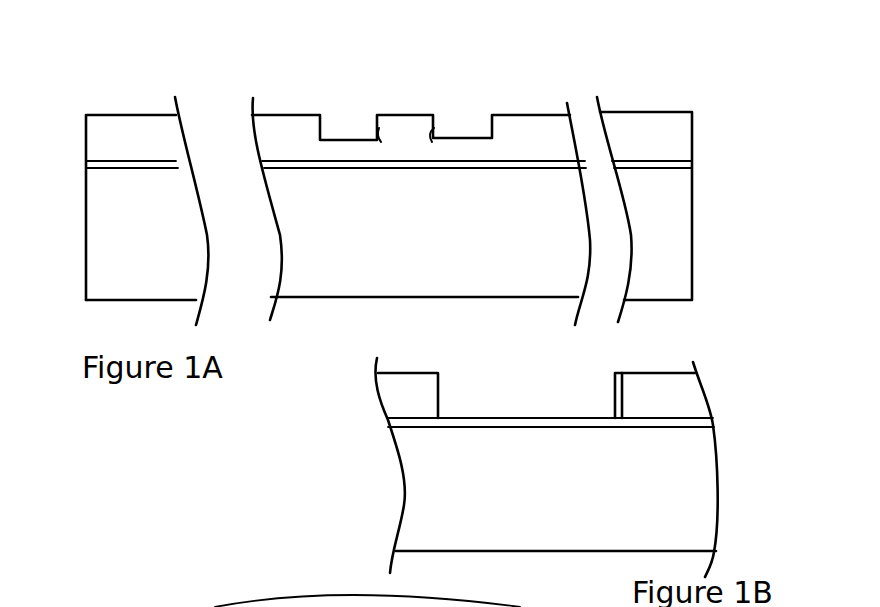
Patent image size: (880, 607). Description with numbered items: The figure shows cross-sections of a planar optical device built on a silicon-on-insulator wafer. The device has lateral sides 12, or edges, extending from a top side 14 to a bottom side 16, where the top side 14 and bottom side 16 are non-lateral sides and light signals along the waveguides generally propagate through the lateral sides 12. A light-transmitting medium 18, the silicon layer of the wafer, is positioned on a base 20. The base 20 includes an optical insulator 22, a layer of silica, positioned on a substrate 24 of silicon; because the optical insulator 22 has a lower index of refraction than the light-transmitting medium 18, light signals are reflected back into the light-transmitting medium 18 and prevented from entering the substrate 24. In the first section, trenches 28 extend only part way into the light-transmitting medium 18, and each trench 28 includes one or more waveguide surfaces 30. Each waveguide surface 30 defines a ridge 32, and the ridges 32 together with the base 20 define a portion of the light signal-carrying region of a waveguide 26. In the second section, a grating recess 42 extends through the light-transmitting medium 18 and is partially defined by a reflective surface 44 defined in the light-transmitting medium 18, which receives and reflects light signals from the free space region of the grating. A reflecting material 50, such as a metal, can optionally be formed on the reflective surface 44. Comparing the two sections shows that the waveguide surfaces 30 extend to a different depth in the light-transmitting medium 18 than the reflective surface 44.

In FIG. 1A, the lateral sides 12 is at (73, 135).
In FIG. 1A, the top side 14 is at (643, 91).
In FIG. 1A, the bottom side 16 is at (472, 311).
In FIG. 1A, the light-transmitting medium 18 is at (272, 137).
In FIG. 1B, the light-transmitting medium 18 is at (391, 396).
In FIG. 1A, the base 20 is at (82, 302).
In FIG. 1B, the base 20 is at (728, 415).
In FIG. 1A, the optical insulator 22 is at (274, 165).
In FIG. 1B, the optical insulator 22 is at (389, 428).
In FIG. 1A, the substrate 24 is at (302, 243).
In FIG. 1B, the substrate 24 is at (421, 497).
In FIG. 1A, the waveguides 26 is at (371, 88).
In FIG. 1A, the trenches 28 is at (353, 139).
In FIG. 1A, the waveguide surfaces 30 is at (418, 145).
In FIG. 1A, the ridge 32 is at (415, 113).
In FIG. 1B, the grating recess 42 is at (443, 391).
In FIG. 1B, the reflective surface 44 is at (624, 385).
In FIG. 1B, the reflecting material 50 is at (615, 382).